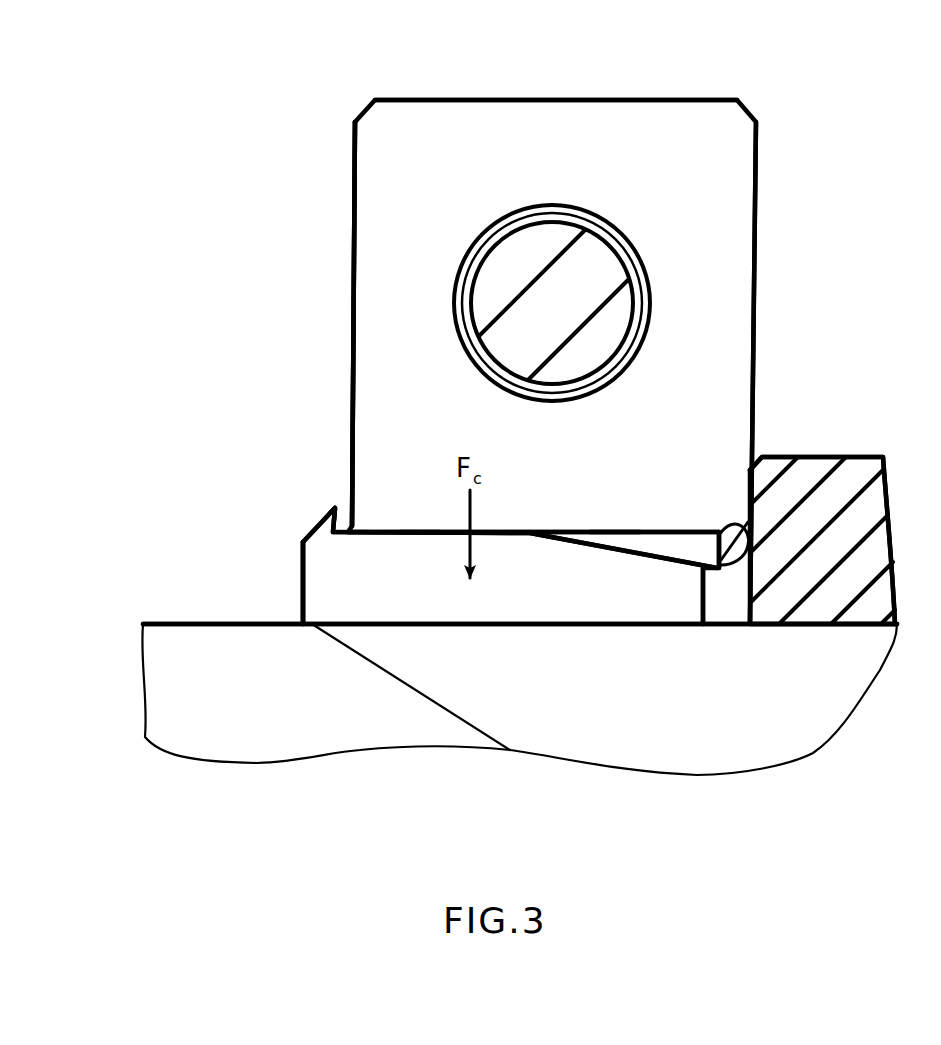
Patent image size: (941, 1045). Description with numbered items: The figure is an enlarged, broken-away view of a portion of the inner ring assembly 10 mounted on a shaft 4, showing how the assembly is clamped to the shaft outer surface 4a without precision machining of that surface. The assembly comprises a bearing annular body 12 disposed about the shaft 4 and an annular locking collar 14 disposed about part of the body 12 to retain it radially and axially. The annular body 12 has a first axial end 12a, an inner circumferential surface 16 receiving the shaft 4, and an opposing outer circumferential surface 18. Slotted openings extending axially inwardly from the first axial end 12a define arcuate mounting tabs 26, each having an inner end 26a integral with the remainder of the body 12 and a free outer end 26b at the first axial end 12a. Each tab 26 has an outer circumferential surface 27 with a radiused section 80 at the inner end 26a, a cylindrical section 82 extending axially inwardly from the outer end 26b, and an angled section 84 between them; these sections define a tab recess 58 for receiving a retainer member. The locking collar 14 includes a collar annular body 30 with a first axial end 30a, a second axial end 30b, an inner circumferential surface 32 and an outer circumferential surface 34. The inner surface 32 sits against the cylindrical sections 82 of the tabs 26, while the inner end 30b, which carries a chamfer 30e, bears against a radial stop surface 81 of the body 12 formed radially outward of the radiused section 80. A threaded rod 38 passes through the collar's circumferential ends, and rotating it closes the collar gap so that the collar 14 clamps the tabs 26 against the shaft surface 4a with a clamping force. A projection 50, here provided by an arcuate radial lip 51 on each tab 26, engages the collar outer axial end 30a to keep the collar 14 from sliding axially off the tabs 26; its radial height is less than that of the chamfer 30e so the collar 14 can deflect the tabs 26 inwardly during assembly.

The shaft 4 is at (150, 703).
The shaft outer surface 4a is at (157, 622).
The inner ring assembly 10 is at (150, 222).
The bearing annular body 12 is at (882, 405).
The first axial end 12a is at (298, 548).
The annular locking collar 14 is at (298, 152).
The inner circumferential surface 16 is at (813, 626).
The outer circumferential surface 18 is at (836, 457).
The arcuate mounting tab 26 is at (558, 627).
The tab inner end 26a is at (720, 626).
The tab free outer end 26b is at (300, 575).
The tab outer circumferential surface 27 is at (513, 524).
The collar annular body 30 is at (350, 222).
The collar first axial end 30a is at (353, 282).
The collar second axial end 30b is at (760, 243).
The chamfer 30e is at (750, 525).
The collar inner circumferential surface 32 is at (400, 535).
The collar outer circumferential surface 34 is at (563, 100).
The threaded rod 38 is at (517, 257).
The projection 50 is at (306, 516).
The arcuate radial lip 51 is at (327, 512).
The tab recess 58 is at (645, 545).
The radiused section 80 is at (724, 522).
The radial stop surface 81 is at (748, 483).
The cylindrical section 82 is at (425, 532).
The angled section 84 is at (615, 543).